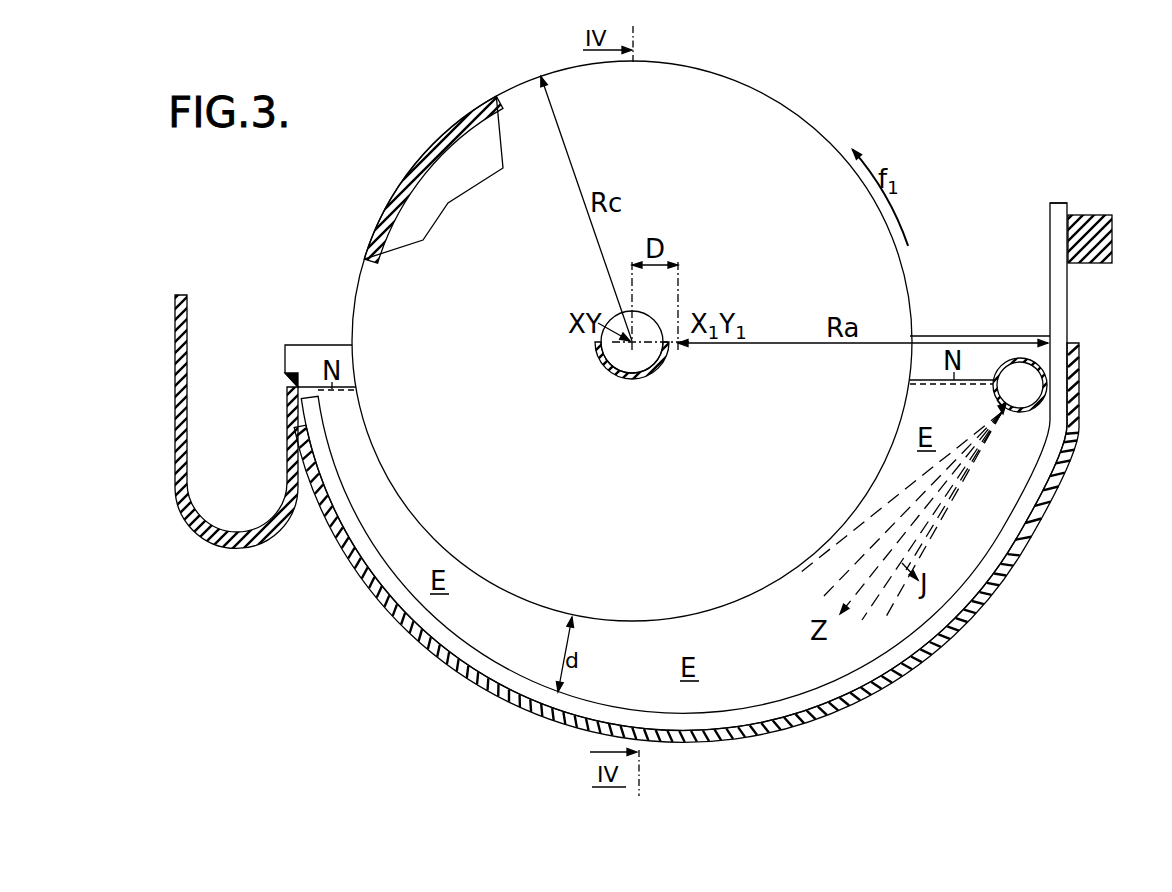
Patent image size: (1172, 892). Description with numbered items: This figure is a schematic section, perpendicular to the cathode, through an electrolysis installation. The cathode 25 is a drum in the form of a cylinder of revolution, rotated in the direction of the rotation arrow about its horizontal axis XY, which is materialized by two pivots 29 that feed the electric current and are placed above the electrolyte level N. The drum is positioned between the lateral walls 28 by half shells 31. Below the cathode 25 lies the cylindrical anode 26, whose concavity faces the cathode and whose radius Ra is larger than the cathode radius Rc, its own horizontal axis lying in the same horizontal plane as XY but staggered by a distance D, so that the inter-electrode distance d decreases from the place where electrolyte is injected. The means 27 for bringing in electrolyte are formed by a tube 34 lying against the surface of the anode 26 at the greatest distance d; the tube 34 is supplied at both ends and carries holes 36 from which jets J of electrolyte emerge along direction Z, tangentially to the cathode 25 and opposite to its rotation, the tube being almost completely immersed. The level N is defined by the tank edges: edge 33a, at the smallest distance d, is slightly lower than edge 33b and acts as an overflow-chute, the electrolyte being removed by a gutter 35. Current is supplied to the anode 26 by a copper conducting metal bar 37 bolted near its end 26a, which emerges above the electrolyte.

The cathode 25 is at (763, 95).
The anode 26 is at (1050, 290).
The end of anode 26a is at (1059, 203).
The means for bringing electrolytic solutions 27 is at (1032, 390).
The walls 28 is at (975, 535).
The pivots 29 is at (621, 315).
The half shells 31 is at (631, 377).
The edge of tank 33a is at (285, 362).
The edge of tank 33b is at (1073, 338).
The tube 34 is at (996, 399).
The gutter 35 is at (236, 550).
The holes 36 is at (1003, 414).
The conducting metal bar 37 is at (1112, 240).